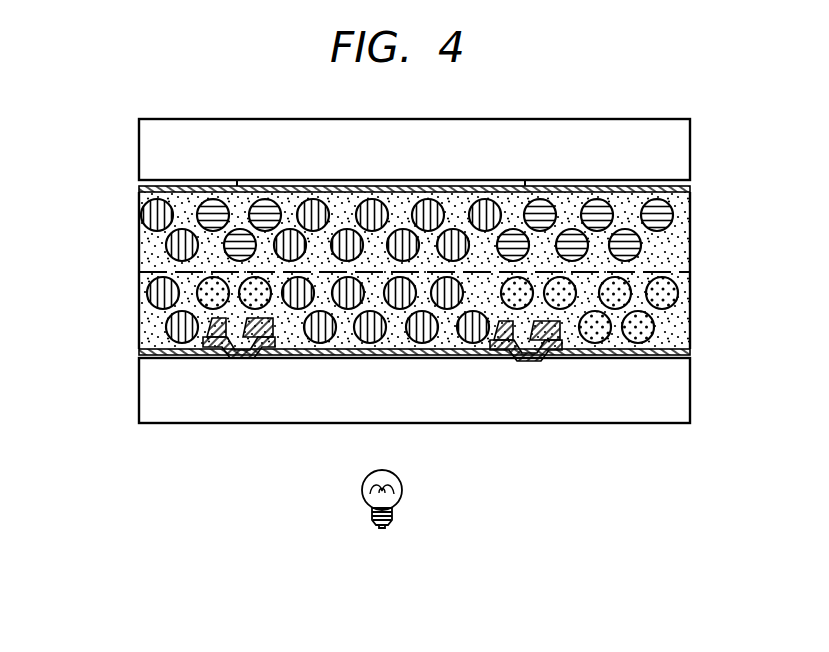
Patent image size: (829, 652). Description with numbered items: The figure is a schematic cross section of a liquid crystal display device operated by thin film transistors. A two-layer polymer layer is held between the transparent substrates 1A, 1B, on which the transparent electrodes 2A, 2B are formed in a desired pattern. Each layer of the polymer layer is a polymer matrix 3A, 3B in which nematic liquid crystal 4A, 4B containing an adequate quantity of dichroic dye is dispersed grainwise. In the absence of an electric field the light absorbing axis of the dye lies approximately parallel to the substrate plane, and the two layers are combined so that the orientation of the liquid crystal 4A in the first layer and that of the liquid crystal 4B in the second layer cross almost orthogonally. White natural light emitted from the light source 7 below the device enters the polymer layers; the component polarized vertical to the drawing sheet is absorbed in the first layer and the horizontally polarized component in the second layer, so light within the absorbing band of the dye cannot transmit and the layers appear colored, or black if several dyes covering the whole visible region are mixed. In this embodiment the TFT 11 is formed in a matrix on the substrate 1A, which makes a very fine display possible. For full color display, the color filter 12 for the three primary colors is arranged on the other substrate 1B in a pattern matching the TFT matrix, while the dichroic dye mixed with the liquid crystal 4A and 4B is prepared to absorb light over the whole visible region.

The transparent substrate 1A is at (149, 386).
The transparent substrate 1B is at (150, 138).
The transparent electrode 2A is at (458, 357).
The transparent electrode 2B is at (143, 188).
The polymer matrix 3A is at (151, 331).
The polymer matrix 3B is at (150, 253).
The liquid crystal 4A is at (150, 293).
The liquid crystal 4B is at (146, 215).
The light source 7 is at (362, 495).
The TFT 11 is at (530, 361).
The color filter 12 is at (513, 182).